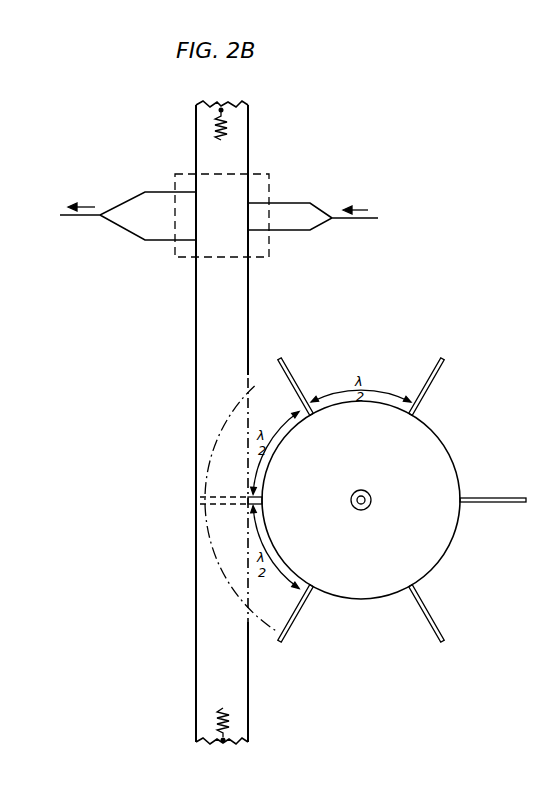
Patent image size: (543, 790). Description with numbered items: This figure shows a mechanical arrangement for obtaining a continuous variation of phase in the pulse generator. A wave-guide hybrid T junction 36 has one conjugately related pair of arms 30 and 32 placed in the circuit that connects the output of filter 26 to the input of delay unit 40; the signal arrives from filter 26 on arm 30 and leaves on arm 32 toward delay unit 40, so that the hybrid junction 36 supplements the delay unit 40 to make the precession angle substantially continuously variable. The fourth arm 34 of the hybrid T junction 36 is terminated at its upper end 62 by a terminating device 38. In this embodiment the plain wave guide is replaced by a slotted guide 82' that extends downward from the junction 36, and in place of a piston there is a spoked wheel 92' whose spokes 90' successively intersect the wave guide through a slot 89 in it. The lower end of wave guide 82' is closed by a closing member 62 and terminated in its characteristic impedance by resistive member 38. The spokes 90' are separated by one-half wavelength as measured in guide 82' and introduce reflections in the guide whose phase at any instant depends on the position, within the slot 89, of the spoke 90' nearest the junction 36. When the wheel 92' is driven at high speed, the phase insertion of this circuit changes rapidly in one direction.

The filter 26 is at (408, 217).
The arm of hybrid T junction 30 is at (278, 203).
The arm of hybrid T junction 32 is at (153, 243).
The fourth arm of hybrid T junction 34 is at (249, 152).
The wave-guide hybrid T junction 36 is at (270, 188).
The terminating device 38 is at (226, 128).
The delay unit 40 is at (25, 215).
The closing member 62 is at (221, 110).
The slotted guide 82' is at (242, 503).
The slot 89 is at (248, 400).
The spokes 90' is at (339, 493).
The spoked wheel 92' is at (379, 500).